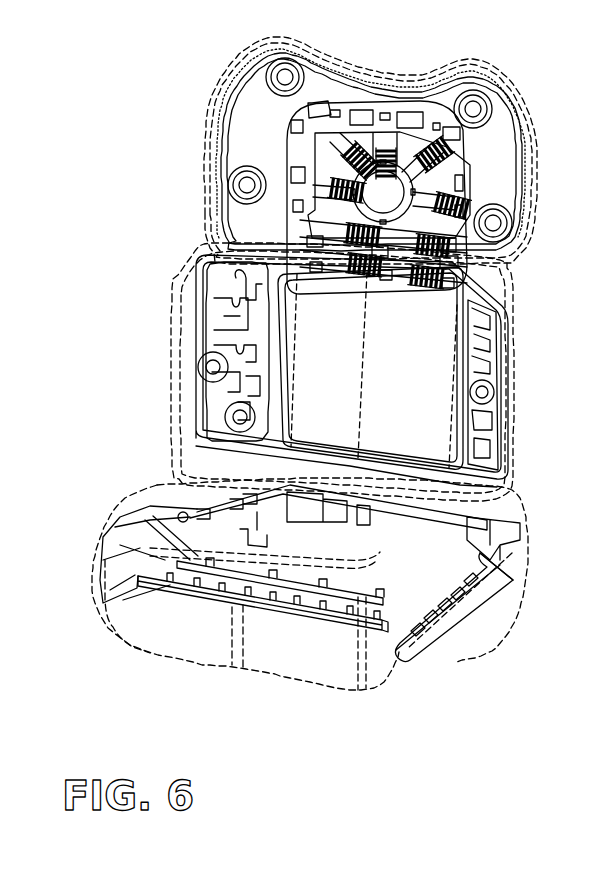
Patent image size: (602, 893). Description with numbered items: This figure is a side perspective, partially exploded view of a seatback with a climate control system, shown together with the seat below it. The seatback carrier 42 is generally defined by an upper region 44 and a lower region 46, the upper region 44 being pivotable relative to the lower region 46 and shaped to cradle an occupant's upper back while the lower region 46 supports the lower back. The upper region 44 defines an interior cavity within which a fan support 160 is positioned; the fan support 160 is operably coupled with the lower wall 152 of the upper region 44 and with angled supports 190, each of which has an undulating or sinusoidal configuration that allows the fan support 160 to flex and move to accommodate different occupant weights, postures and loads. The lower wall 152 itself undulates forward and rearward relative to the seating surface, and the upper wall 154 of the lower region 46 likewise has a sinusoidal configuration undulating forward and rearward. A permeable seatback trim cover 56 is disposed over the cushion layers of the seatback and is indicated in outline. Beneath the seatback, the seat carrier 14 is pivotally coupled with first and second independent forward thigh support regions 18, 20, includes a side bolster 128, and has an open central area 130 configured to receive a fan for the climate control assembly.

The seat carrier 14 is at (488, 562).
The first independent forward thigh support region 18 is at (200, 597).
The second independent forward thigh support region 20 is at (310, 600).
The seatback carrier 42 is at (525, 167).
The upper region 44 is at (258, 121).
The lower region 46 is at (206, 393).
The permeable seatback trim cover 56 is at (246, 46).
The side bolster 128 is at (400, 373).
The open central area 130 is at (470, 524).
The lower wall 152 is at (458, 243).
The upper wall 154 is at (460, 305).
The fan support 160 is at (383, 194).
The angled supports 190 is at (440, 200).